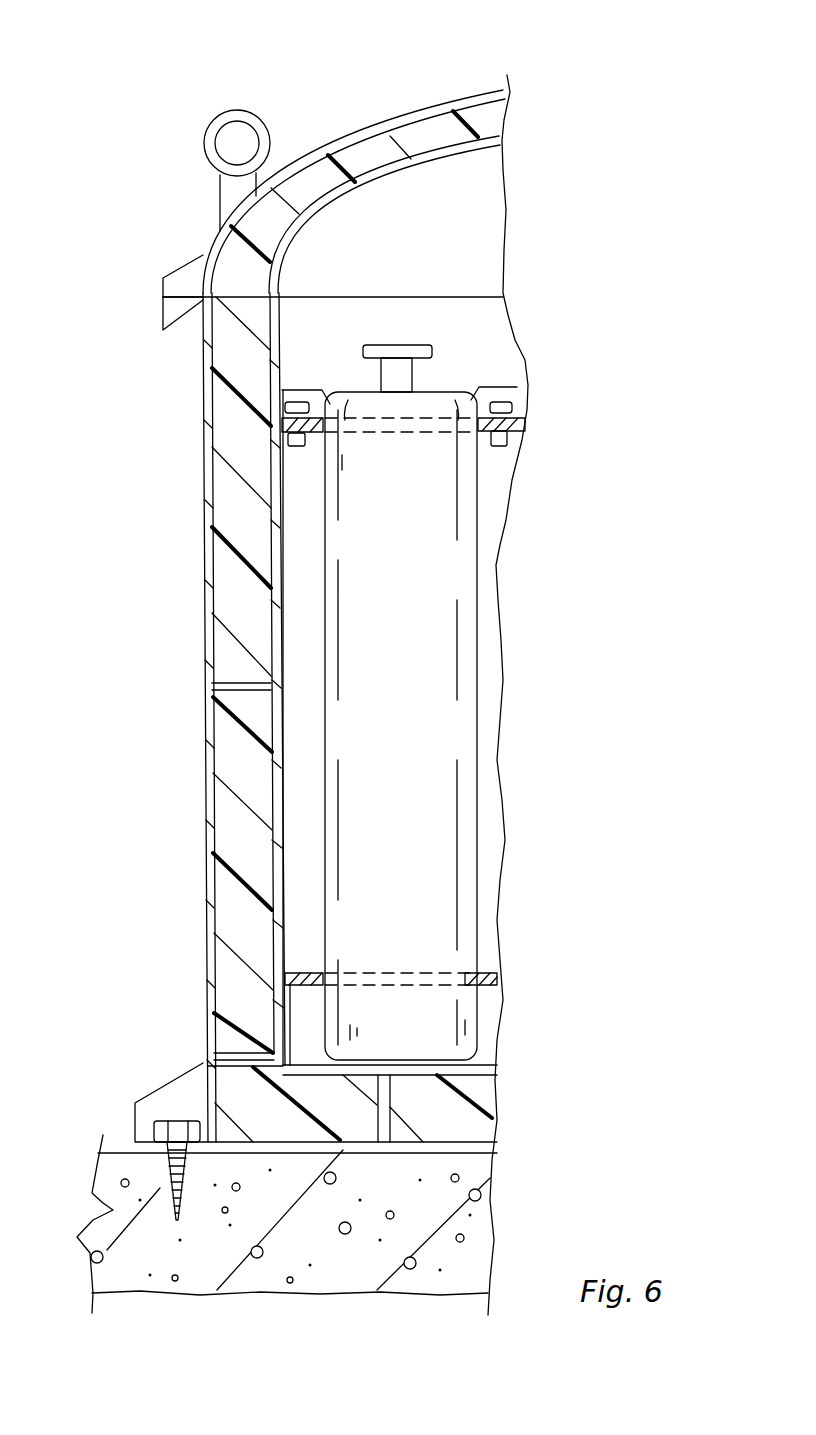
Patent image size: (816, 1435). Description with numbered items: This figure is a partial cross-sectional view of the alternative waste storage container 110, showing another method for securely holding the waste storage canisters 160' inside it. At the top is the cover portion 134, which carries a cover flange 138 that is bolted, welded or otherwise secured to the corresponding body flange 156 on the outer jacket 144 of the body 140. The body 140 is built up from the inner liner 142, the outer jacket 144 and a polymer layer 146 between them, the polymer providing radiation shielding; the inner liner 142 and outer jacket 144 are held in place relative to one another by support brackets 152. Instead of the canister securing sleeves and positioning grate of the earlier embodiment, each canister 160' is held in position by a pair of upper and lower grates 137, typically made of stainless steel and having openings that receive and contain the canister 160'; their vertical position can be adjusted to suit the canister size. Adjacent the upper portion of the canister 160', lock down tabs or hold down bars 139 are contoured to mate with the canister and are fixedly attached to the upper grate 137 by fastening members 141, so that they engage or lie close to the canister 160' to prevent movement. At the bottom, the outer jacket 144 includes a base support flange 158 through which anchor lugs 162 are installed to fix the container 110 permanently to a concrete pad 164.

The waste storage container 110 is at (316, 104).
The cover portion 134 is at (420, 112).
The cover flange 138 is at (178, 273).
The body flange 156 is at (190, 318).
The body 140 is at (203, 618).
The outer jacket 144 is at (204, 462).
The inner liner 142 is at (270, 520).
The polymer layer 146 is at (240, 912).
The support brackets 152 is at (253, 697).
The canisters 160' is at (470, 702).
The lock down tabs or hold down bars 139 is at (300, 392).
The fastening members 141 is at (515, 412).
The grates 137 is at (527, 430).
The base support flange 158 is at (185, 1095).
The anchor lugs 162 is at (160, 1160).
The concrete pad 164 is at (470, 1260).